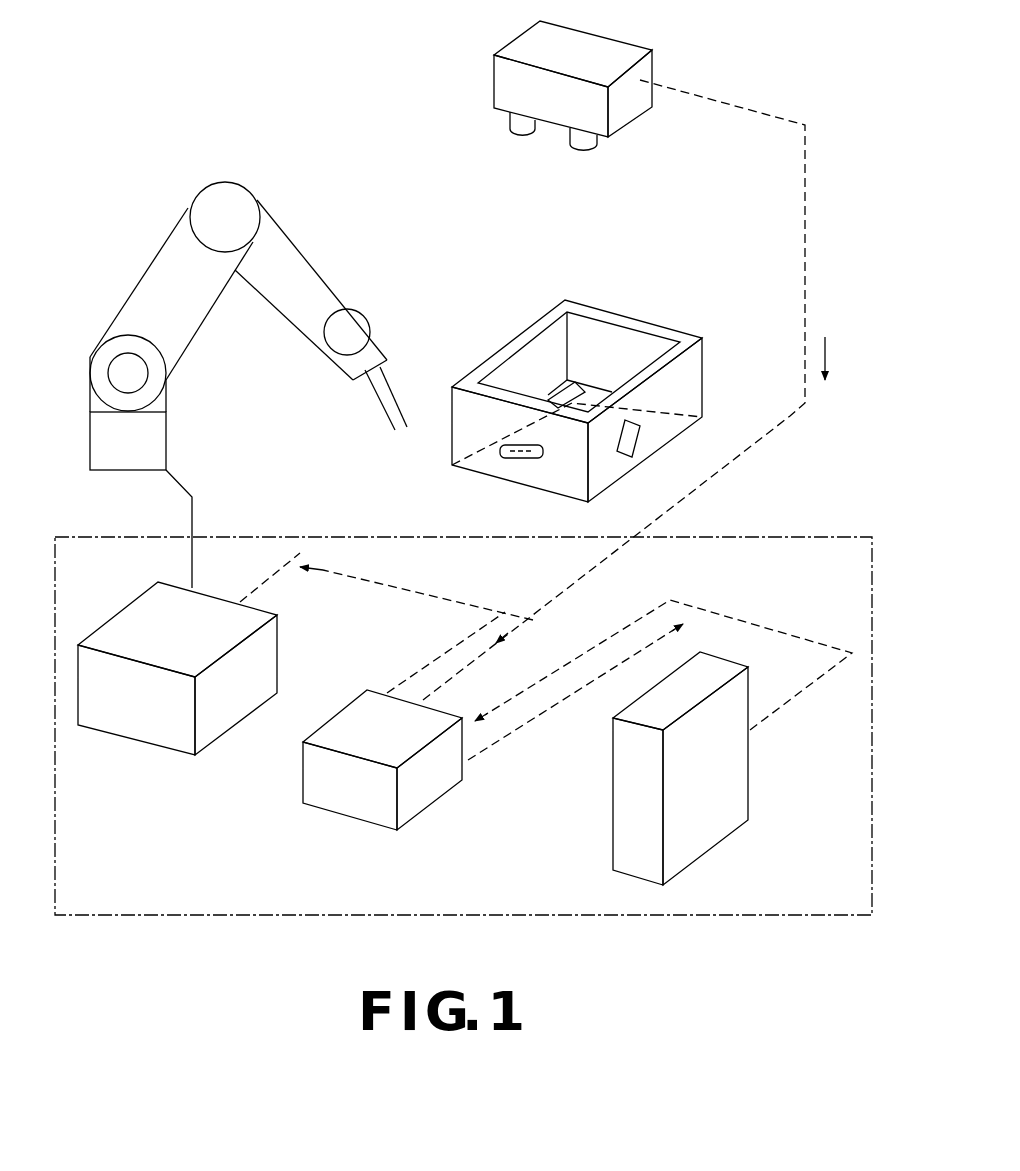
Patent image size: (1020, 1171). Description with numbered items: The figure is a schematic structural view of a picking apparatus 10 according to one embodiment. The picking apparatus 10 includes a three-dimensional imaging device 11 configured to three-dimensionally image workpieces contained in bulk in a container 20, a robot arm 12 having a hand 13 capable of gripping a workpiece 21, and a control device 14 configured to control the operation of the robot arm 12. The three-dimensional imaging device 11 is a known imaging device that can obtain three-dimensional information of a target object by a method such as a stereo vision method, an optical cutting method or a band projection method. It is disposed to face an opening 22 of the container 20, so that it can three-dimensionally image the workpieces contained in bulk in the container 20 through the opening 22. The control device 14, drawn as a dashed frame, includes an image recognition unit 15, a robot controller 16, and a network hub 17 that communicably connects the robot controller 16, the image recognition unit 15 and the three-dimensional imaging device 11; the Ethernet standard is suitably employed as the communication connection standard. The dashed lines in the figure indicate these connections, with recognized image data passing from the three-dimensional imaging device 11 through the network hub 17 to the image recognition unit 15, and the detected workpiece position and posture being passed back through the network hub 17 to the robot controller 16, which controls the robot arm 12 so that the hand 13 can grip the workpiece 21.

The picking apparatus 10 is at (190, 27).
The three-dimensional imaging device 11 is at (513, 90).
The robot arm 12 is at (158, 292).
The hand 13 is at (380, 408).
The control device 14 is at (482, 917).
The image recognition unit 15 is at (720, 788).
The robot controller 16 is at (148, 720).
The network hub 17 is at (348, 797).
The container 20 is at (687, 375).
The workpiece 21 is at (580, 393).
The opening 22 is at (536, 356).